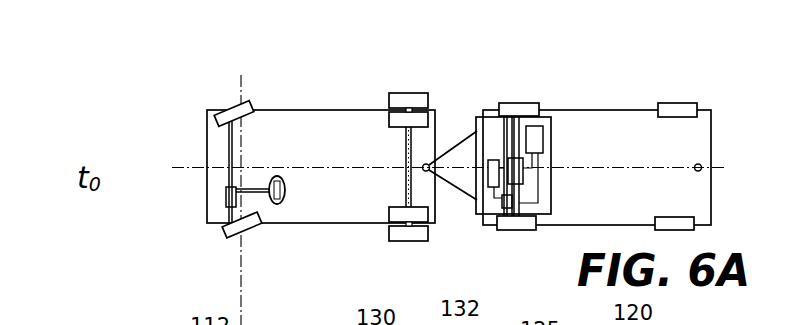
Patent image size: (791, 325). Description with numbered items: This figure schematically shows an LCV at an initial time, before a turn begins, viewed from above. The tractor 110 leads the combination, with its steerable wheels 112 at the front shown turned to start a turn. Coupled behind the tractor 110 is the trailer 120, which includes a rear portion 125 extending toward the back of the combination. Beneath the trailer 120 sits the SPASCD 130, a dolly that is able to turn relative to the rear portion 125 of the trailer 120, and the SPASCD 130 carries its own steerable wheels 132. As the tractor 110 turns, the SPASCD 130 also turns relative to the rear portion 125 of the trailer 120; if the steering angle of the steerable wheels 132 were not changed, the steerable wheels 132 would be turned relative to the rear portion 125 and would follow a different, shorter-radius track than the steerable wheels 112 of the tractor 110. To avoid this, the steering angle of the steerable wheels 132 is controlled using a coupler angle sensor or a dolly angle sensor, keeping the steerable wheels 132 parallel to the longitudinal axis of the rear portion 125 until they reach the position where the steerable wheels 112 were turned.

The tractor 110 is at (325, 133).
The steerable wheels of tractor 112 is at (243, 100).
The trailer 120 is at (610, 123).
The rear portion of trailer 125 is at (598, 113).
The SPASCD 130 is at (476, 117).
The steerable wheels of SPASCD 132 is at (510, 101).